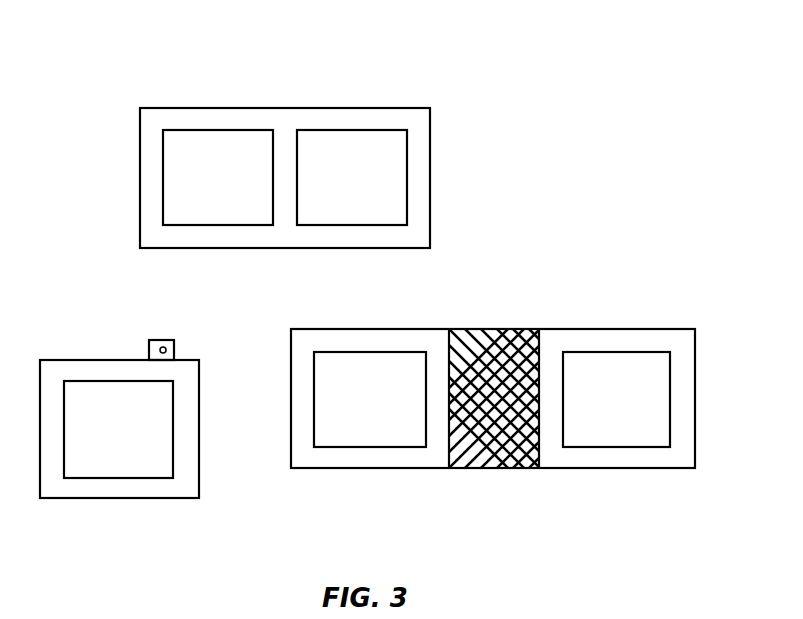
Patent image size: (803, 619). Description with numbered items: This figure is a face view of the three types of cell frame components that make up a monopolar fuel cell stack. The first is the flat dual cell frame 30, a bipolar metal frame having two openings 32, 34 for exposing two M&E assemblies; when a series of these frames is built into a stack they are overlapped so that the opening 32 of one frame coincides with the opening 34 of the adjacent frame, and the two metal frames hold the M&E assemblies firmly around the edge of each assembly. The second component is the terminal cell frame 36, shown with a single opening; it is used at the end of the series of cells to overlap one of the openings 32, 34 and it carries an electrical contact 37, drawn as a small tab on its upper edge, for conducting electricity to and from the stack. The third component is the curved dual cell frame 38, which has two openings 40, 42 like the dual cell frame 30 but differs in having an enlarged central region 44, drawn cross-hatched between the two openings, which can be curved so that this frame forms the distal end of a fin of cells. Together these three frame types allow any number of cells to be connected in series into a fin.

The dual cell frame 30 is at (158, 90).
The opening 32 is at (224, 145).
The opening 34 is at (354, 145).
The terminal cell frame 36 is at (72, 327).
The electrical contact 37 is at (163, 347).
The curved dual cell frame 38 is at (578, 302).
The opening 40 is at (353, 363).
The opening 42 is at (635, 362).
The enlarged central region 44 is at (484, 338).